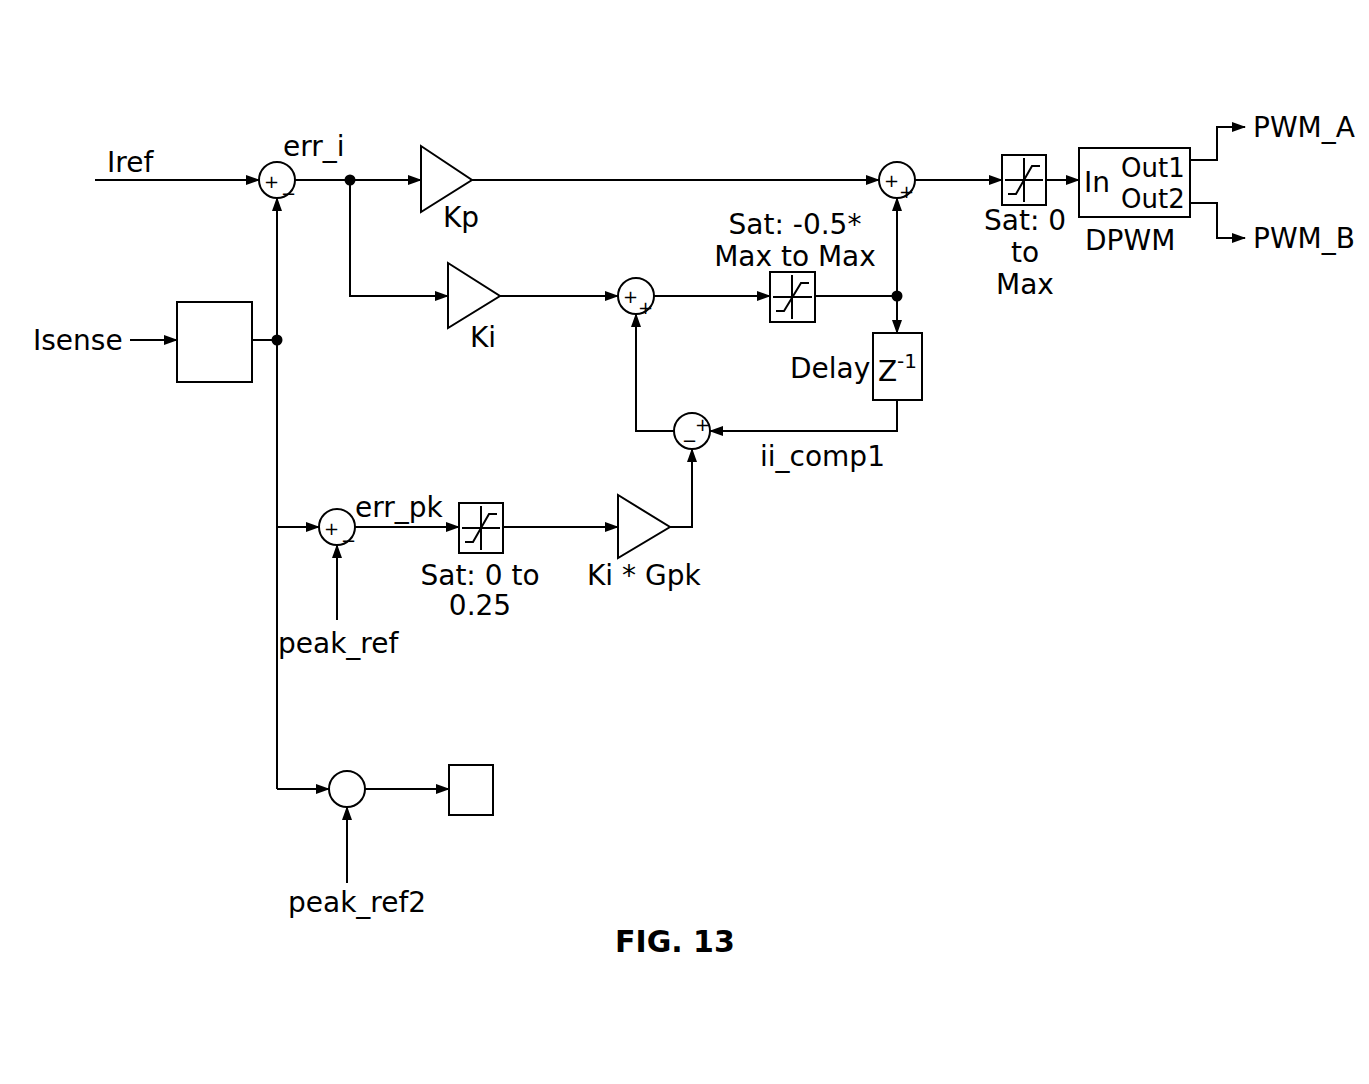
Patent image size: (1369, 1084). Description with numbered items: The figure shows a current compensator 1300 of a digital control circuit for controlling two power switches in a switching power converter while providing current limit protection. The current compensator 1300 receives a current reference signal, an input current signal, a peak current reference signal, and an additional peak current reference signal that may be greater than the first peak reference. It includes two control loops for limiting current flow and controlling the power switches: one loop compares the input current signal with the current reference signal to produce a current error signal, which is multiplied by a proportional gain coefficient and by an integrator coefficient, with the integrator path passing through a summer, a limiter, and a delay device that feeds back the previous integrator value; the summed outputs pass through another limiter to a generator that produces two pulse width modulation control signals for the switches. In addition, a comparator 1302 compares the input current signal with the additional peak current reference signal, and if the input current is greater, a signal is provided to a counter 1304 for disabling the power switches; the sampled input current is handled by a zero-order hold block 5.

The current compensator 1300 is at (1035, 82).
The comparator 1302 is at (355, 771).
The counter 1304 is at (469, 765).
The zero-order hold block 5 is at (214, 361).